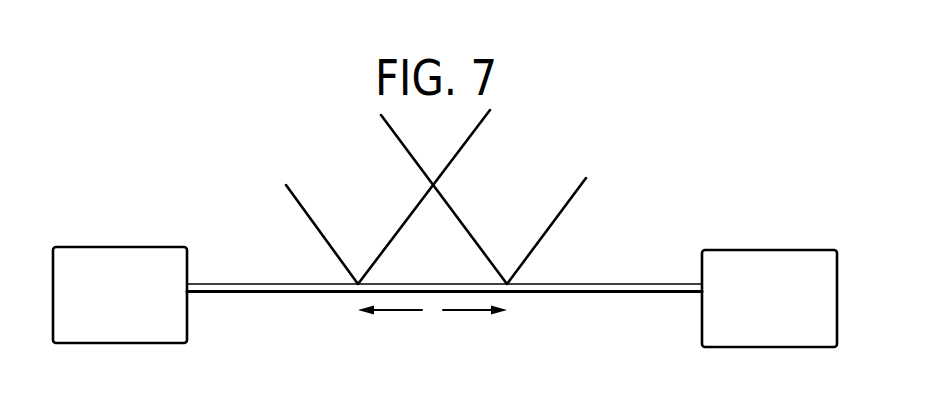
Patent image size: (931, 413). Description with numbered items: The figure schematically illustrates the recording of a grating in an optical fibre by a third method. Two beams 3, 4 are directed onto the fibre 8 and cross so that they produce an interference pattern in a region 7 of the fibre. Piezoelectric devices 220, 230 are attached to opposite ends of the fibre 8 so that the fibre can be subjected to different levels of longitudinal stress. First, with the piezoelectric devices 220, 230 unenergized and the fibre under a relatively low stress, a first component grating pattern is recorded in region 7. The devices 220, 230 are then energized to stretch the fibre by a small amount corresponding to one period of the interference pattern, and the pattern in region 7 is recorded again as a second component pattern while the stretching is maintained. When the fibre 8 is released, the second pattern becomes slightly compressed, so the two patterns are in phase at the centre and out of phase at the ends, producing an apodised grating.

The beam 3 is at (388, 197).
The beam 4 is at (483, 199).
The region 7 is at (432, 311).
The fibre 8 is at (565, 293).
The piezoelectric device 220 is at (142, 246).
The piezoelectric device 230 is at (743, 250).